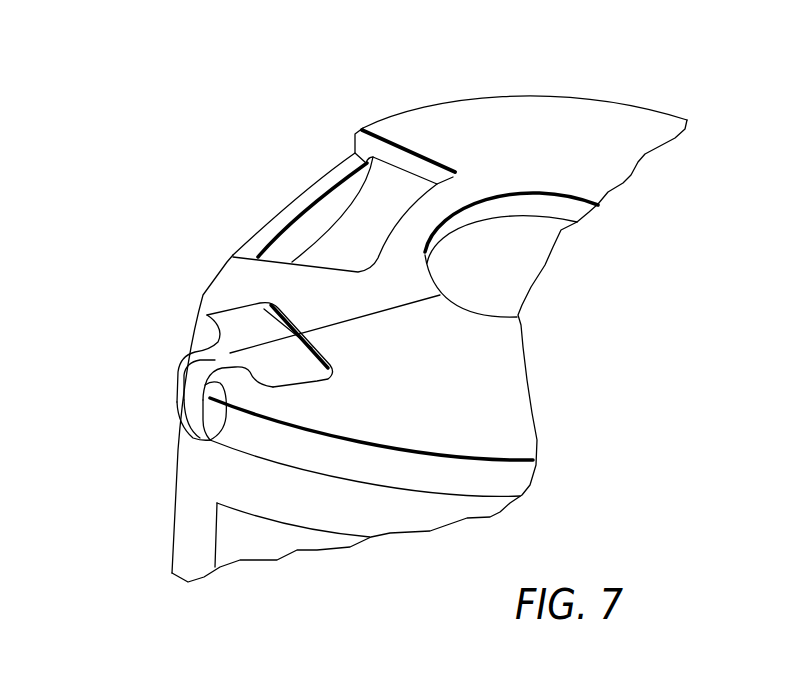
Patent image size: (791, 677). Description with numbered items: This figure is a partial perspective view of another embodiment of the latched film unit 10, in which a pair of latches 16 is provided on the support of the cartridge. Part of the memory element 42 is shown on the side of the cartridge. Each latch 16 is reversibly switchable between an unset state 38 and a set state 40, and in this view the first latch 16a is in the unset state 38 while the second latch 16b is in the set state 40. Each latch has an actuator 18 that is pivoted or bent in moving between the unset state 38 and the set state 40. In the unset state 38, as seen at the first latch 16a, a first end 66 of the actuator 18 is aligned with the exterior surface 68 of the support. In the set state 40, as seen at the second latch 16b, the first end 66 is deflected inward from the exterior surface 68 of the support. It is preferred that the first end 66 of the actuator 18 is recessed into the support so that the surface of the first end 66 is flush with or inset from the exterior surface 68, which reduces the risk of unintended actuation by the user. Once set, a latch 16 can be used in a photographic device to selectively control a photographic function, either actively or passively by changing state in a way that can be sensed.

The latched film unit 10 is at (610, 87).
The latch 16 is at (299, 324).
The first latch 16a is at (207, 313).
The second latch 16b is at (371, 395).
The actuator 18 is at (135, 394).
The unset state 38 is at (200, 348).
The set state 40 is at (207, 440).
The memory element 42 is at (263, 543).
The first end 66 is at (250, 317).
The exterior surface 68 is at (487, 423).